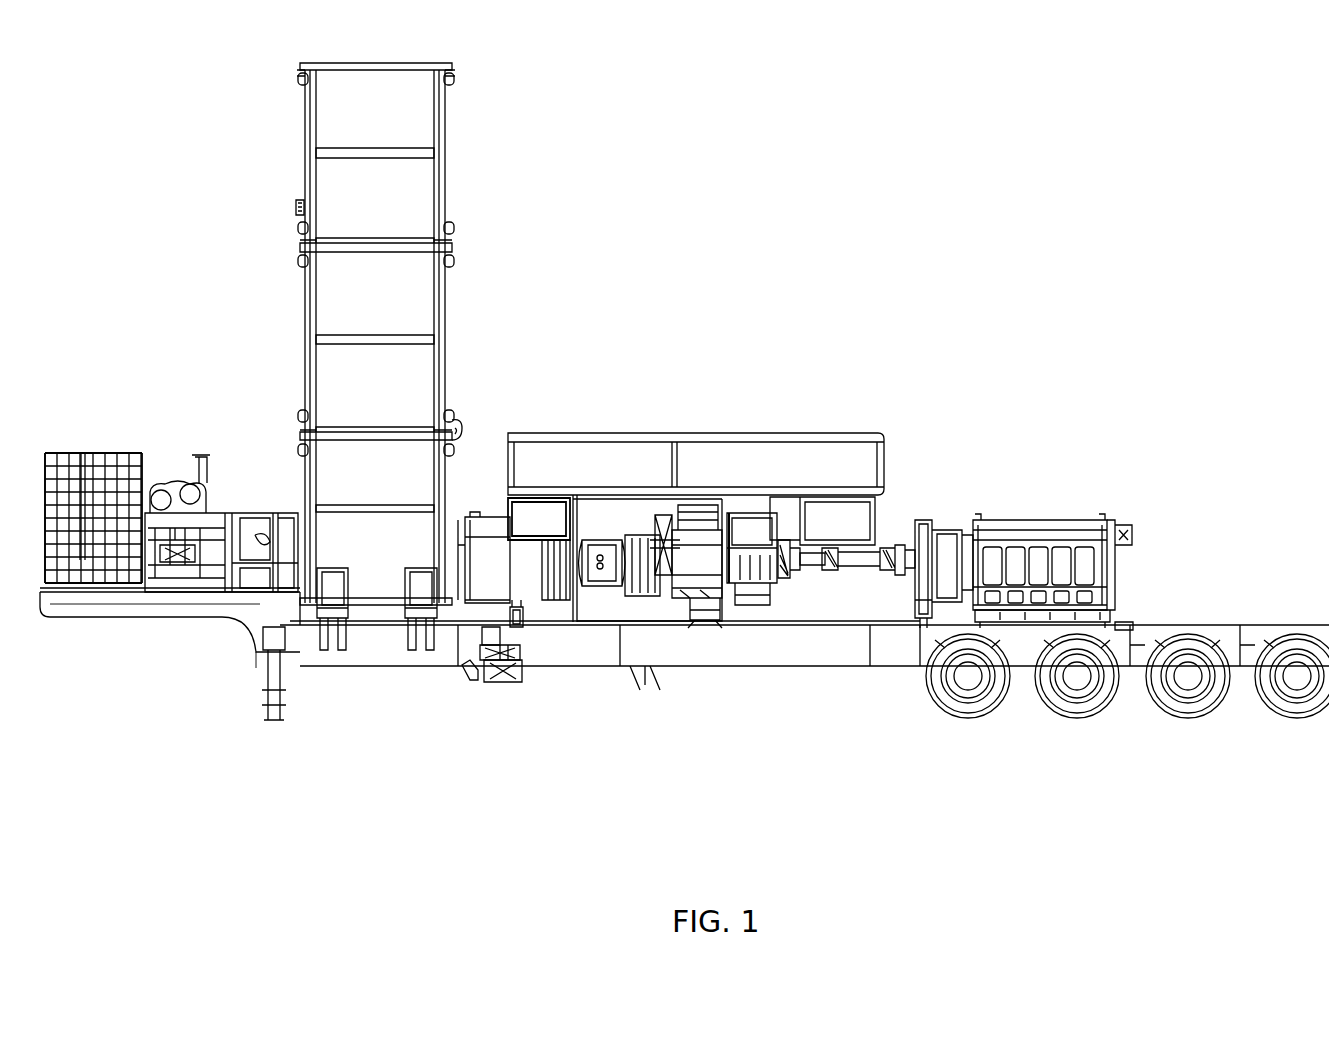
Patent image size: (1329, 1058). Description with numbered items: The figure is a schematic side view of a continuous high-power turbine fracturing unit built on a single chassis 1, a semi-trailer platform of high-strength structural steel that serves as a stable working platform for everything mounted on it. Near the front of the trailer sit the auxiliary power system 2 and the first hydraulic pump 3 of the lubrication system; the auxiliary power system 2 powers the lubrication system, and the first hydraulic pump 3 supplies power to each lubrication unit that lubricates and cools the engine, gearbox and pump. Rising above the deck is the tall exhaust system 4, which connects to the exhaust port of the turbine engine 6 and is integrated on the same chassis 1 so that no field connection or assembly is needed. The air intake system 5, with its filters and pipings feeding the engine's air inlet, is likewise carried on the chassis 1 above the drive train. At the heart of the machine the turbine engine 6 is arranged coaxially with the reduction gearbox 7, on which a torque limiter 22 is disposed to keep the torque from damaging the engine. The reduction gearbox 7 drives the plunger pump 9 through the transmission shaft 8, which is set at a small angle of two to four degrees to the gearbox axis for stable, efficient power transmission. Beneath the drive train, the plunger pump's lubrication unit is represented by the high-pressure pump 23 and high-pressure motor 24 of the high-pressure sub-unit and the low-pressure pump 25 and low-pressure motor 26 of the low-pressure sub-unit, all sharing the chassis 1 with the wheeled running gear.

The chassis 1 is at (110, 602).
The auxiliary power system 2 is at (155, 505).
The first hydraulic pump 3 is at (228, 575).
The exhaust system 4 is at (390, 597).
The air intake system 5 is at (777, 435).
The turbine engine 6 is at (658, 590).
The reduction gearbox 7 is at (745, 590).
The transmission shaft 8 is at (868, 565).
The plunger pump 9 is at (1050, 520).
The torque limiter 22 is at (800, 572).
The high-pressure pump 23 is at (485, 636).
The high-pressure motor 24 is at (517, 637).
The low-pressure pump 25 is at (490, 660).
The low-pressure motor 26 is at (513, 668).